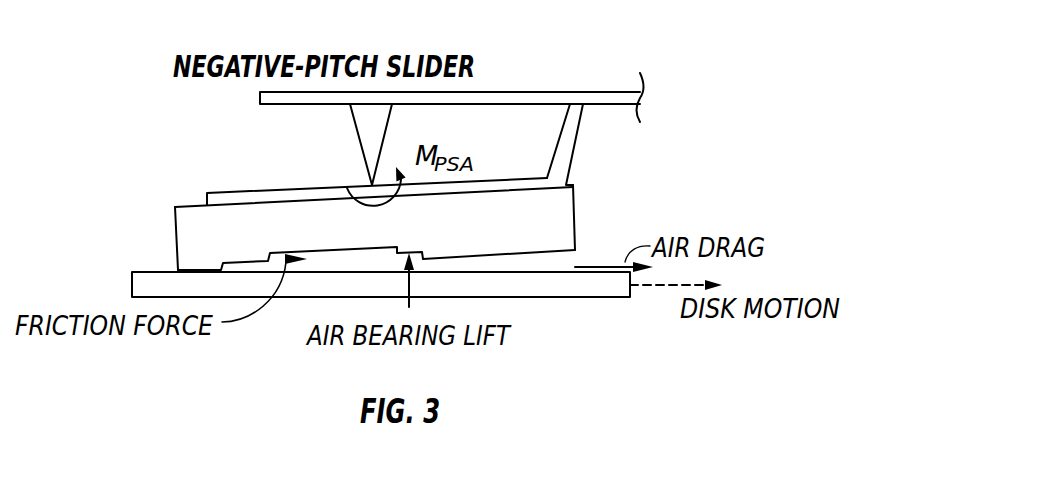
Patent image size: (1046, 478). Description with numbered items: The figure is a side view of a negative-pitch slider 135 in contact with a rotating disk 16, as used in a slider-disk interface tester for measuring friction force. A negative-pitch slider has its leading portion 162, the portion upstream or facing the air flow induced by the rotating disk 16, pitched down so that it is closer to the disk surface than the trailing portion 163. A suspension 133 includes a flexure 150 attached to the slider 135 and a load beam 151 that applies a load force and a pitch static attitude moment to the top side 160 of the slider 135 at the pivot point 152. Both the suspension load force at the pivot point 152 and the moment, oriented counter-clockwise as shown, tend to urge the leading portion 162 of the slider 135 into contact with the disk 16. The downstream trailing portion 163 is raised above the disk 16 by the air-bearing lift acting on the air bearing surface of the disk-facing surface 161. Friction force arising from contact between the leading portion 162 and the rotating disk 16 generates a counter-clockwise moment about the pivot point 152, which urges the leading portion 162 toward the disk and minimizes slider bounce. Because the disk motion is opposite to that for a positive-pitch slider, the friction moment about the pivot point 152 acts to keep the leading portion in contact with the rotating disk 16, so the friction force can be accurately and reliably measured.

The rotating disk 16 is at (609, 298).
The suspension 133 is at (613, 92).
The negative-pitch slider 135 is at (290, 190).
The flexure 150 is at (566, 142).
The load beam 151 is at (497, 92).
The pivot point 152 is at (362, 184).
The top side 160 is at (197, 203).
The disk-facing surface 161 is at (483, 258).
The leading portion 162 is at (185, 232).
The trailing portion 163 is at (562, 232).